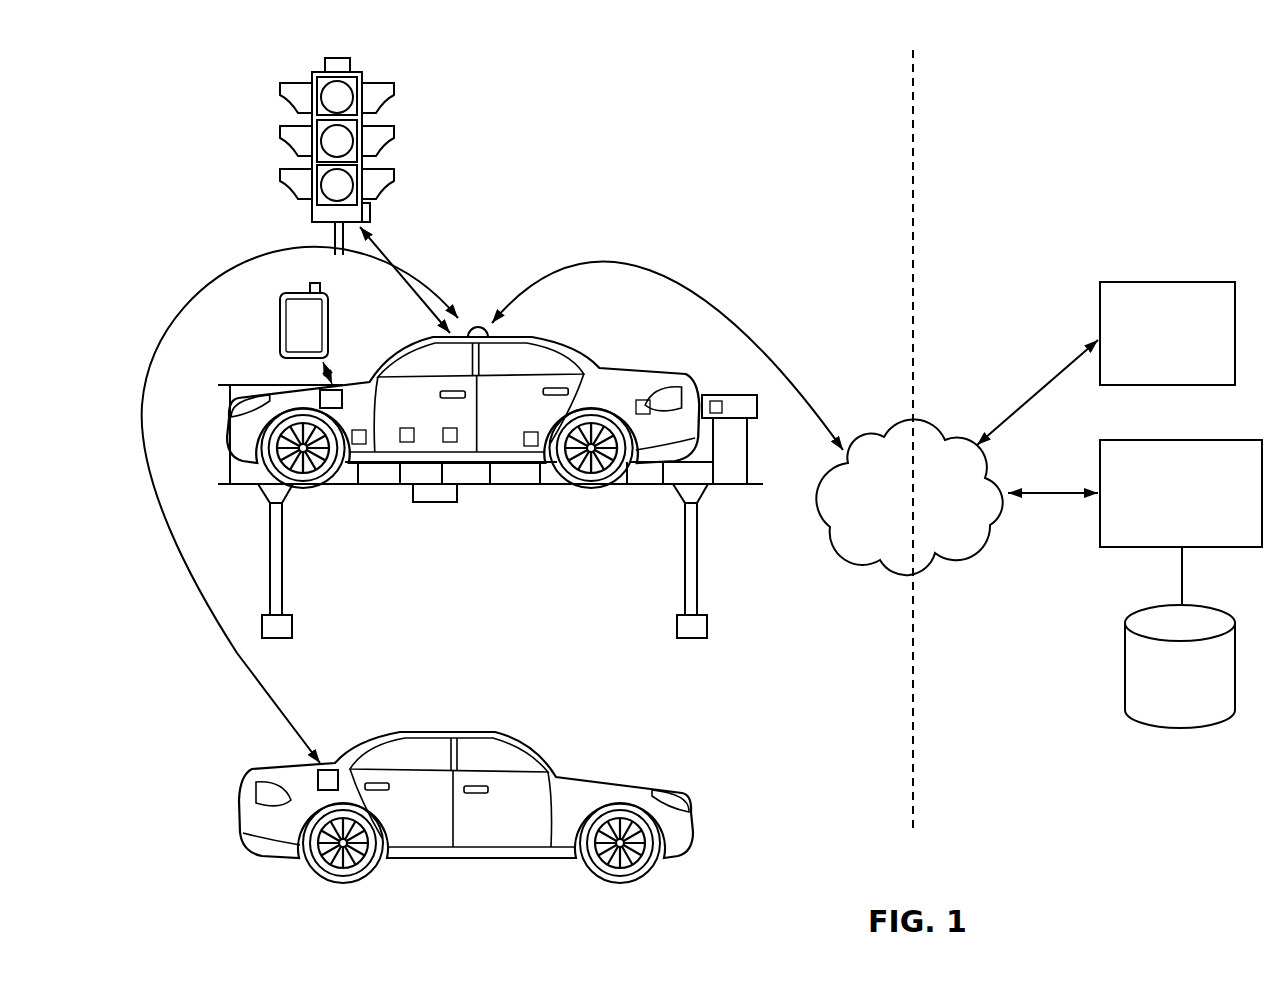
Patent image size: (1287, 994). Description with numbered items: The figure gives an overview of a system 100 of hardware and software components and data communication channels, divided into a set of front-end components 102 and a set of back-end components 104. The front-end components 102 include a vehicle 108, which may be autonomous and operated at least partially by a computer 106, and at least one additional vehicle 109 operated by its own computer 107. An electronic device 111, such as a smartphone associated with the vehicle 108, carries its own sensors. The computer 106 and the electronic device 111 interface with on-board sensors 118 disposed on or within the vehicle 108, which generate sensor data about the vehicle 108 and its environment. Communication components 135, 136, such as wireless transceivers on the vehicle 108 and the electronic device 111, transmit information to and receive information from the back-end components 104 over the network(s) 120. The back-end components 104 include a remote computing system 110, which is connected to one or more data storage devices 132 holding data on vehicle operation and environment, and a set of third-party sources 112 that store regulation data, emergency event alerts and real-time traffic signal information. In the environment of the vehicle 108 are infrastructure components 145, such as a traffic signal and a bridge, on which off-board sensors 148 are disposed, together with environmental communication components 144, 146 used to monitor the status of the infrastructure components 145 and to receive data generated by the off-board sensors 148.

The system 100 is at (931, 39).
The front-end components 102 is at (740, 200).
The back-end components 104 is at (1040, 200).
The computer 106 is at (340, 390).
The computer 107 is at (326, 770).
The vehicle 108 is at (558, 347).
The additional vehicle 109 is at (243, 797).
The remote computing system 110 is at (1222, 440).
The electronic device 111 is at (280, 325).
The third-party sources 112 is at (1212, 282).
The on-board sensors 118 is at (643, 400).
The network(s) 120 is at (880, 435).
The data storage devices 132 is at (1210, 606).
The communication component 135 is at (476, 327).
The communication component 136 is at (310, 288).
The environmental communication component 144 is at (757, 408).
The infrastructure components 145 is at (313, 220).
The environmental communication component 146 is at (372, 212).
The off-board sensors 148 is at (325, 64).